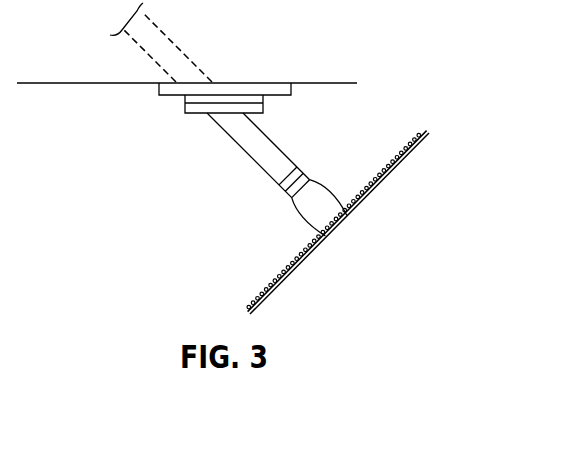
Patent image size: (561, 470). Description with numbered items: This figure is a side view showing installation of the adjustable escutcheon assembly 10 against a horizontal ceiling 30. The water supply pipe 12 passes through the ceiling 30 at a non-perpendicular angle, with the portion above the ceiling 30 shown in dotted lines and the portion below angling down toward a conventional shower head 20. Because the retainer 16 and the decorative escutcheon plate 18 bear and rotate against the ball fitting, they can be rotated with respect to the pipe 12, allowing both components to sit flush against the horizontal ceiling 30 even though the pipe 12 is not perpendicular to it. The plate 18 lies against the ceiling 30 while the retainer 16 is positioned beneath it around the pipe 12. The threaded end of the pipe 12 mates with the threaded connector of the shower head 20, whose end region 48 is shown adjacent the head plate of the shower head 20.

The assembly 10 is at (189, 202).
The water supply pipe 12 is at (158, 31).
The retainer 16 is at (195, 100).
The decorative escutcheon plate 18 is at (168, 90).
The shower head 20 is at (428, 135).
The ceiling 30 is at (50, 84).
The head 48 is at (340, 196).